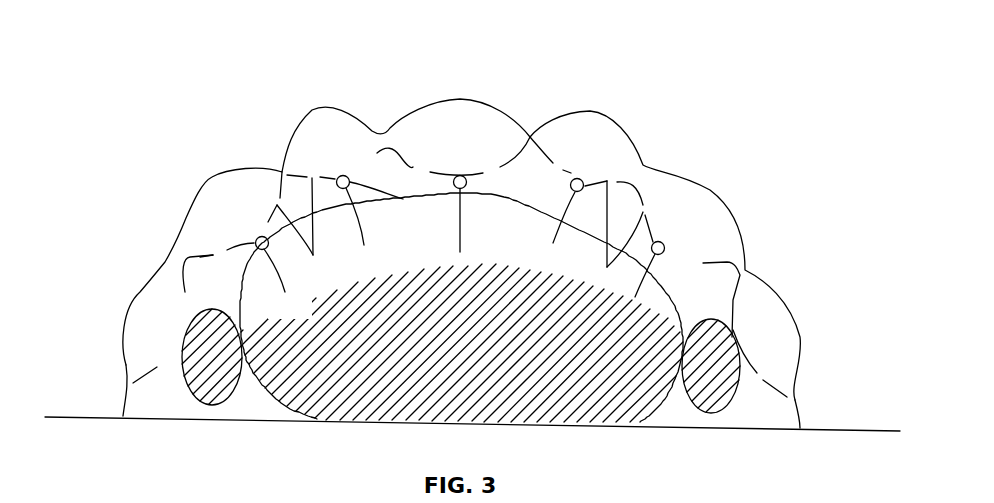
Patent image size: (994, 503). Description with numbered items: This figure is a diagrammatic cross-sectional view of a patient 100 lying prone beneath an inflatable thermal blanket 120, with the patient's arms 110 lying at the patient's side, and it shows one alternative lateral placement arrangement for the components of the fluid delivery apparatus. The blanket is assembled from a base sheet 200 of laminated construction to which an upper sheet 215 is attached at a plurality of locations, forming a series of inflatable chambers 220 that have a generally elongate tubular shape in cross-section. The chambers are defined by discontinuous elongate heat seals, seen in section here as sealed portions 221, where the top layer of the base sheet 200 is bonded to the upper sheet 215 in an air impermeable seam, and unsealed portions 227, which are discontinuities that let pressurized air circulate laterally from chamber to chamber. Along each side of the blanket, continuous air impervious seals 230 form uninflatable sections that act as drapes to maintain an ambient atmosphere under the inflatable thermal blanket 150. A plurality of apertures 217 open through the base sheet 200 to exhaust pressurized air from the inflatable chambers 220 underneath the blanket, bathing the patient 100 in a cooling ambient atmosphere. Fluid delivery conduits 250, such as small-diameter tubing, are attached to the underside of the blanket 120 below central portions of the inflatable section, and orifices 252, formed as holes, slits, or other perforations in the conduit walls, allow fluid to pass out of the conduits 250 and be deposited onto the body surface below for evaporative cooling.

The patient 100 is at (298, 402).
The arms 110 is at (217, 398).
The inflatable thermal blanket 120 is at (688, 66).
The inflatable thermal blanket 150 is at (125, 410).
The base sheet 200 is at (178, 228).
The upper sheet 215 is at (212, 178).
The apertures 217 is at (460, 235).
The inflatable chambers 220 is at (129, 338).
The sealed portions 221 is at (282, 172).
The unsealed portions 227 is at (167, 258).
The continuous air impervious seals 230 is at (126, 414).
The fluid delivery conduits 250 is at (255, 248).
The orifices 252 is at (459, 258).